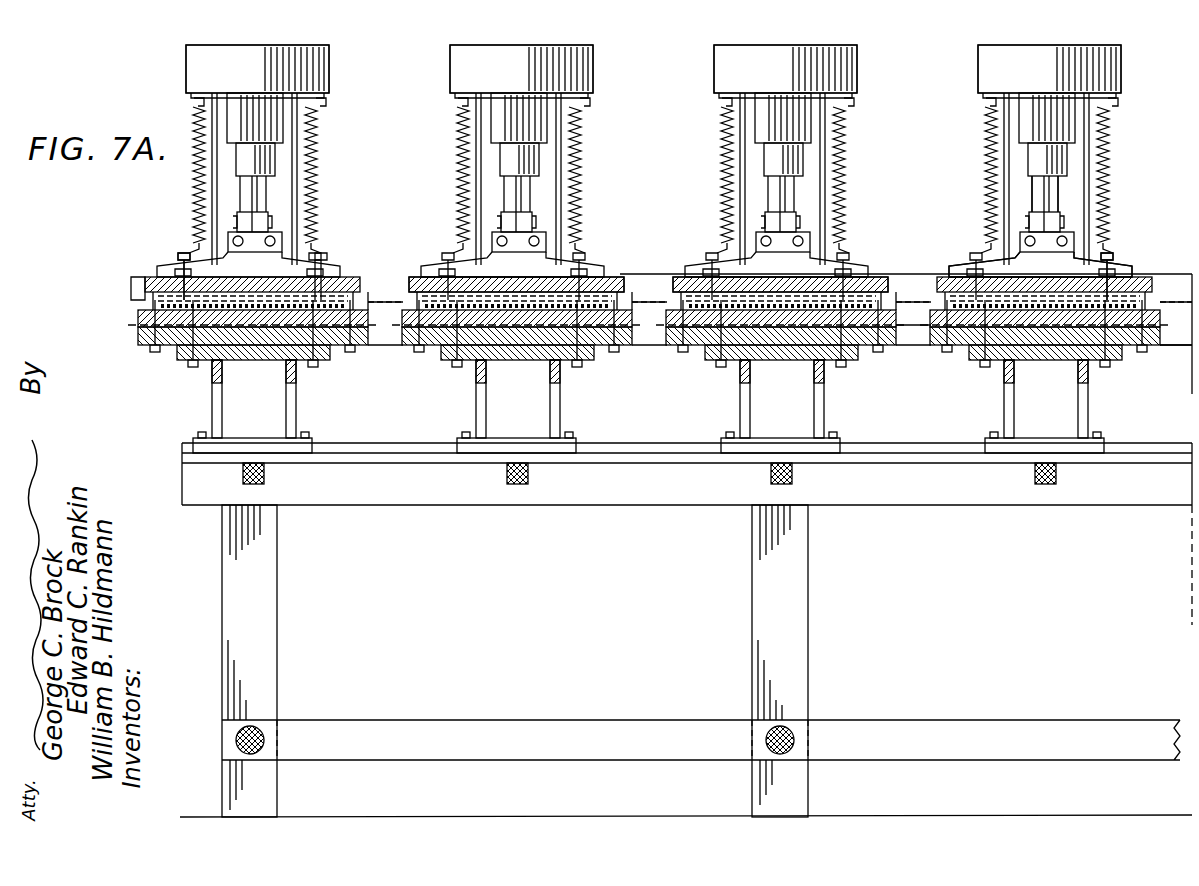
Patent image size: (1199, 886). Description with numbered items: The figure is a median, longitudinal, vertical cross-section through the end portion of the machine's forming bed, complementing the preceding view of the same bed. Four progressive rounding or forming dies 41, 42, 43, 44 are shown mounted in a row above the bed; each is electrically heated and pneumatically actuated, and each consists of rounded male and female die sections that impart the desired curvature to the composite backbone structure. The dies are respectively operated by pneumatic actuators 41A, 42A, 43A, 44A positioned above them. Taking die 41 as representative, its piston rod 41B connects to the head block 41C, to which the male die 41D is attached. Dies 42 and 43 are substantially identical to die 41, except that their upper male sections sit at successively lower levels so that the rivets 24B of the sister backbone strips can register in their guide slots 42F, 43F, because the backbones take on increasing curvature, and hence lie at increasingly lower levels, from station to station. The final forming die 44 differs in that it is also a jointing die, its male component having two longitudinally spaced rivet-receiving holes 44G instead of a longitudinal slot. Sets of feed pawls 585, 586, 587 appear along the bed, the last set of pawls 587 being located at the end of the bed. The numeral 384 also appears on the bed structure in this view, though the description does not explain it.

The forming die 44 is at (330, 240).
The forming die 43 is at (599, 244).
The forming die 42 is at (862, 246).
The forming die 41 is at (1128, 224).
The pneumatic actuator 44A is at (283, 72).
The pneumatic actuator 43A is at (547, 72).
The pneumatic actuator 42A is at (811, 72).
The pneumatic actuator 41A is at (1075, 72).
The rivet-receiving holes 44G is at (163, 290).
The guide slot 43F is at (432, 296).
The guide slot 42F is at (700, 296).
The feed pawls 587 is at (366, 300).
The feed pawls 586 is at (628, 300).
The feed pawls 585 is at (892, 300).
The piston rod 41B is at (1062, 205).
The head block 41C is at (1066, 276).
The male die 41D is at (1150, 298).
The rail 384 is at (1160, 305).
The rivets 24B is at (926, 300).